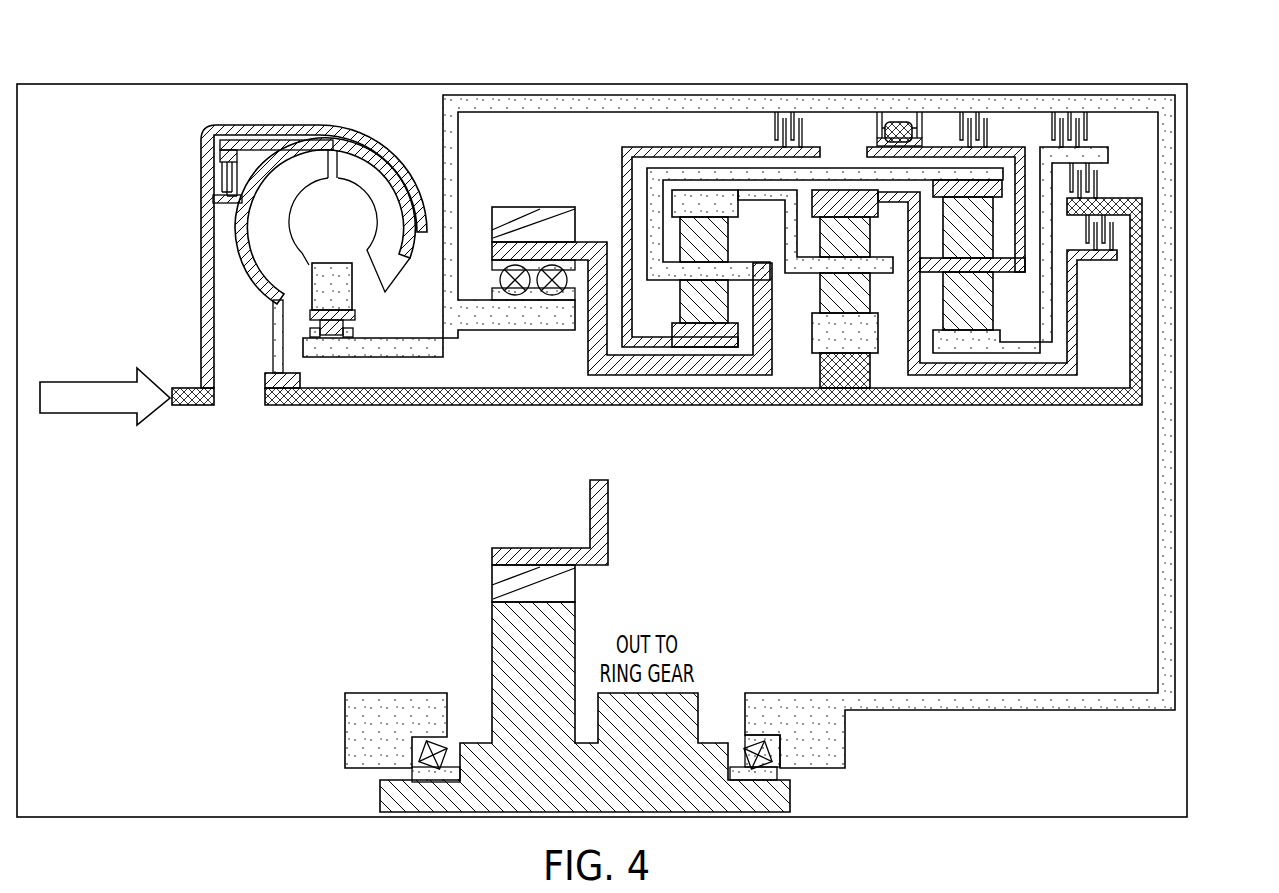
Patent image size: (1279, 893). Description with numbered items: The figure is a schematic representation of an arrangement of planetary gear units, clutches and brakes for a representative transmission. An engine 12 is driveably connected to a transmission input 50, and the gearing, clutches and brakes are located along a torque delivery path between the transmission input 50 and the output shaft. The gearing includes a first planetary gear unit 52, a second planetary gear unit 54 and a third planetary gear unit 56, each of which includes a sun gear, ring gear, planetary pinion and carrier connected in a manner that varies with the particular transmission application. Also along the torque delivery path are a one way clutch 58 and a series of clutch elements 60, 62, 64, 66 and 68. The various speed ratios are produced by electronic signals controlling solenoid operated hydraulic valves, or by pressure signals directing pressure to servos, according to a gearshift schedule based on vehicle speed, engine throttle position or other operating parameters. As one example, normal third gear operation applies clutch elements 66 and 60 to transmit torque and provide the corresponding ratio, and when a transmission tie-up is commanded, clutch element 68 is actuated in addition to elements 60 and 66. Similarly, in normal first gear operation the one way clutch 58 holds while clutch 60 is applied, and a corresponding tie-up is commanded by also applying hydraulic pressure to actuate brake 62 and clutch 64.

The engine 12 is at (93, 382).
The transmission input 50 is at (318, 408).
The first planetary gear unit 52 is at (975, 472).
The second planetary gear unit 54 is at (855, 472).
The third planetary gear unit 56 is at (718, 472).
The one way clutch 58 is at (889, 104).
The clutch element 60 is at (777, 104).
The brake 62 is at (971, 104).
The clutch 64 is at (1057, 104).
The clutch element 66 is at (1112, 177).
The clutch element 68 is at (1126, 232).